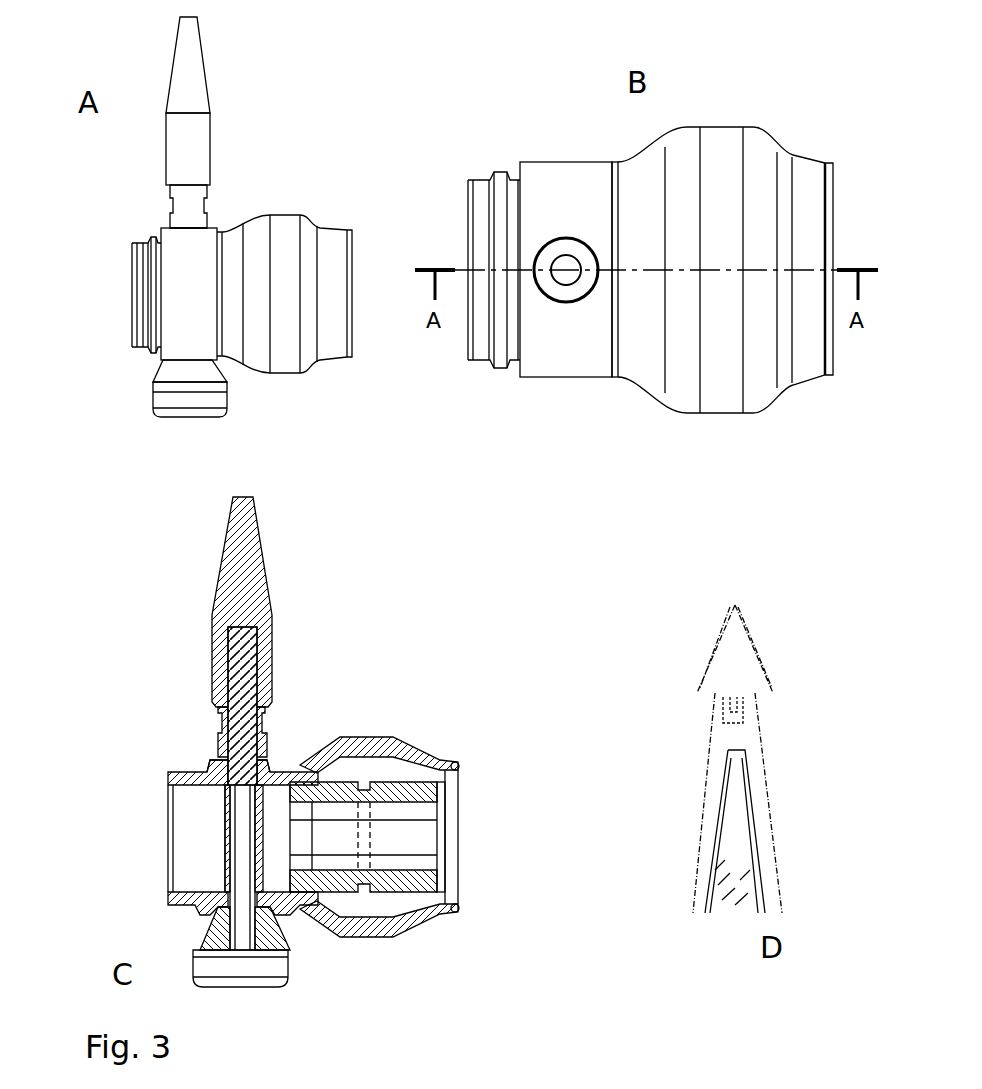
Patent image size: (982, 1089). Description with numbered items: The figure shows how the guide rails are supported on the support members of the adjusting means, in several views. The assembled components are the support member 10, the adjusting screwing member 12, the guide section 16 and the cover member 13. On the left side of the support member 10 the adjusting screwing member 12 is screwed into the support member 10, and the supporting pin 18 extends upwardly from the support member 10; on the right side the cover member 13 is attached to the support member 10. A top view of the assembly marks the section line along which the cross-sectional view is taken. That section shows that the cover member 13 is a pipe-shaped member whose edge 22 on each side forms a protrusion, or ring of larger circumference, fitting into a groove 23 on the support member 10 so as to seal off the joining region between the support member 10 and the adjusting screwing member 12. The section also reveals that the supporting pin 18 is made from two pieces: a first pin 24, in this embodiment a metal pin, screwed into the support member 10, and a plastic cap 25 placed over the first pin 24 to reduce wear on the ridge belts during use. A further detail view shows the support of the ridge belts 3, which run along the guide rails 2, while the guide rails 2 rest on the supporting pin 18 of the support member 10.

The supporting pin 18 is at (205, 140).
The support member 10 is at (198, 268).
The adjusting screwing member 12 is at (140, 313).
The cover member 13 is at (290, 350).
The guide section 16 is at (180, 400).
The plastic cap 25 is at (252, 597).
The first pin 24 is at (250, 730).
The groove 23 is at (205, 762).
The edge 22 is at (455, 907).
The ridge belt 3 is at (695, 693).
The guide rail 2 is at (747, 742).